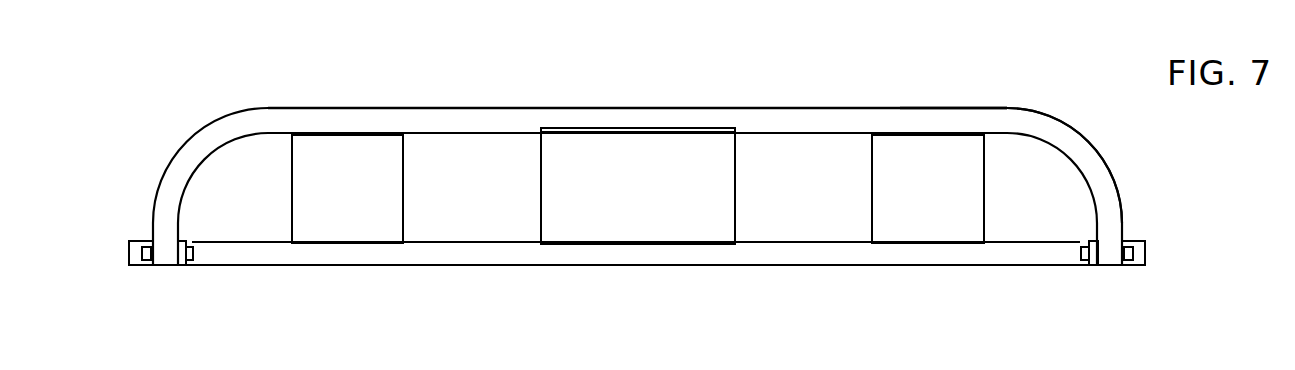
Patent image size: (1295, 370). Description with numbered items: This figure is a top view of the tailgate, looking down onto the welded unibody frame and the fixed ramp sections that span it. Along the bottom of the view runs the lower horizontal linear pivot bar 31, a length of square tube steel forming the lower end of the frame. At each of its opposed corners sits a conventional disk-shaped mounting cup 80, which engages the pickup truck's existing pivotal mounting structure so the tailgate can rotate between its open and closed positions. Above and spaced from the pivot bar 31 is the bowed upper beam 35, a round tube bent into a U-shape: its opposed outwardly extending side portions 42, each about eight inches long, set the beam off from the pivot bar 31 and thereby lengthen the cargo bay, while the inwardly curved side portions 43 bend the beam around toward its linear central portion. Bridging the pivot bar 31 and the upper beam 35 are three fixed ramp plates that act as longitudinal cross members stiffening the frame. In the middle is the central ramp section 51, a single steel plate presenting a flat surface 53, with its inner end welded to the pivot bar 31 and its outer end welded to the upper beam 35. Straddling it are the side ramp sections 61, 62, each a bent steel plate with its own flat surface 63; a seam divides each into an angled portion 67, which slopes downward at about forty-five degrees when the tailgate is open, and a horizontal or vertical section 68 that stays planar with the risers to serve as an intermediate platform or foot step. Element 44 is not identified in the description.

The lower horizontal linear pivot bar 31 is at (776, 262).
The upper beam 35 is at (816, 114).
The outwardly extending side portion 42 is at (1108, 192).
The inwardly curved side portion 43 is at (1078, 150).
The top portion of cover 44 is at (973, 112).
The central ramp section 51 is at (728, 178).
The flat surface 53 is at (638, 186).
The side ramp section 61 is at (972, 193).
The side ramp section 62 is at (392, 182).
The flat surface 63 is at (638, 189).
The angled portion 67 is at (402, 215).
The horizontal or vertical section 68 is at (388, 135).
The mounting cup 80 is at (1137, 267).